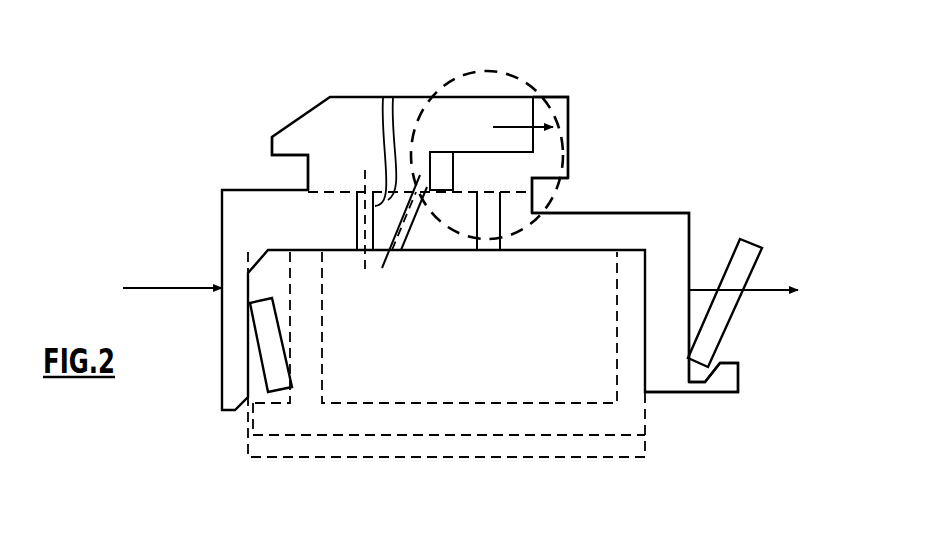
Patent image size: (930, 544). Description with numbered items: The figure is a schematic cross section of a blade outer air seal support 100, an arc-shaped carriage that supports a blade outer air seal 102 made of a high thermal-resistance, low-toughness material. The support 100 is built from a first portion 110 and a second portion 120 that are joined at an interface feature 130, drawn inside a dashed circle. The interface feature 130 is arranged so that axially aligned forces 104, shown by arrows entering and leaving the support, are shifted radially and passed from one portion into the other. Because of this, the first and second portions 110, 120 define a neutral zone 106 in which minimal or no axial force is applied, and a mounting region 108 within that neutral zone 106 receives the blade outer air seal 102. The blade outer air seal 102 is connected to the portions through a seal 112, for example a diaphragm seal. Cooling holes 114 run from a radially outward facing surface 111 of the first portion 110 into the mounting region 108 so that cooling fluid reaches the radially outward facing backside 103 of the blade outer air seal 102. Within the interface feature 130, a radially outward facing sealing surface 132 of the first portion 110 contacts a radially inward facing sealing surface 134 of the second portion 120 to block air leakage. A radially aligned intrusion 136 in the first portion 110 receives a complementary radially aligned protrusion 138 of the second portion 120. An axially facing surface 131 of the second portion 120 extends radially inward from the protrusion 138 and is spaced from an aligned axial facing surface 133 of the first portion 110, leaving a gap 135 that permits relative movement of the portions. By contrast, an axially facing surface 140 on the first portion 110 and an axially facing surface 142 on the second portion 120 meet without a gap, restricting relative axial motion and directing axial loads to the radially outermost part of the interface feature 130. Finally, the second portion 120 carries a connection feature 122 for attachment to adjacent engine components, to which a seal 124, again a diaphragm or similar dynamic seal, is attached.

The blade outer air seal support 100 is at (184, 88).
The blade outer air seal 102 is at (600, 427).
The radially outward facing backside 103 is at (470, 398).
The axially aligned forces 104 is at (167, 287).
The neutral zone 106 is at (287, 458).
The mounting region 108 is at (378, 395).
The first portion 110 is at (232, 212).
The radially outward facing surface 111 is at (262, 190).
The seal 112 is at (265, 342).
The cooling holes 114 is at (383, 98).
The second portion 120 is at (660, 222).
The connection feature 122 is at (723, 382).
The seal 124 is at (747, 238).
The interface feature 130 is at (492, 72).
The axially facing surface 131 is at (497, 240).
The radially outward facing sealing surface 132 is at (396, 251).
The axial facing surface 133 is at (478, 240).
The radially inward facing sealing surface 134 is at (460, 192).
The gap 135 is at (487, 223).
The radially aligned intrusion 136 is at (447, 160).
The radially aligned protrusion 138 is at (433, 150).
The axially facing surface 140 is at (595, 123).
The axially facing surface 142 is at (541, 112).